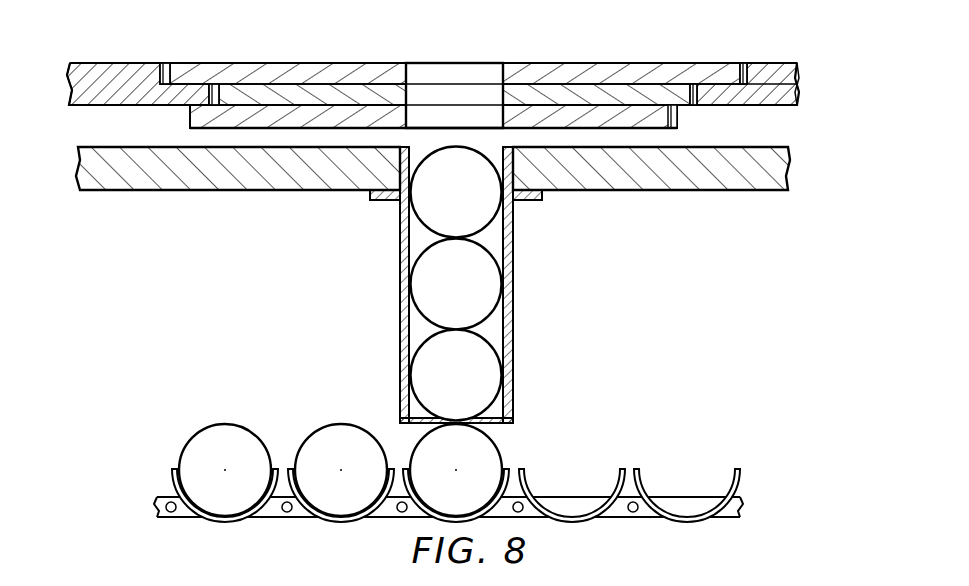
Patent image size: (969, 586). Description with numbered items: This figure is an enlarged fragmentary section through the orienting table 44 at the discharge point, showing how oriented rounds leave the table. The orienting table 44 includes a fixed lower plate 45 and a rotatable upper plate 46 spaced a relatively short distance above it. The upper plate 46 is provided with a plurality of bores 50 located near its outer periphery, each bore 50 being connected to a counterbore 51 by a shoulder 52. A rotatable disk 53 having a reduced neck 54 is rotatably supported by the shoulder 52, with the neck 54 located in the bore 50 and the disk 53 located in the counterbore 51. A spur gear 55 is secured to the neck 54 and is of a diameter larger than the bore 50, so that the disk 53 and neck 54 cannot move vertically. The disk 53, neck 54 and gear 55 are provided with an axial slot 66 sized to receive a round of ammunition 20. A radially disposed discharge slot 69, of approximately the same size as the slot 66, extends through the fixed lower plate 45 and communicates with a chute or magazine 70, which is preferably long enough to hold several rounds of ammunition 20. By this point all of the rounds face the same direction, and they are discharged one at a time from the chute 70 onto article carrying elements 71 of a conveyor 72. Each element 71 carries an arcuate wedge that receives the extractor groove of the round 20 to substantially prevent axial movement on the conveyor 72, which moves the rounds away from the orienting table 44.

The round of ammunition 20 is at (477, 208).
The orienting table 44 is at (130, 58).
The fixed lower plate 45 is at (111, 181).
The rotatable upper plate 46 is at (83, 77).
The bore 50 is at (205, 98).
The counterbore 51 is at (154, 68).
The shoulder 52 is at (200, 88).
The rotatable disk 53 is at (281, 62).
The reduced neck 54 is at (320, 93).
The spur gear 55 is at (249, 135).
The axial slot 66 is at (478, 72).
The discharge slot 69 is at (410, 156).
The chute 70 is at (515, 313).
The article carrying element 71 is at (174, 481).
The conveyor 72 is at (233, 530).